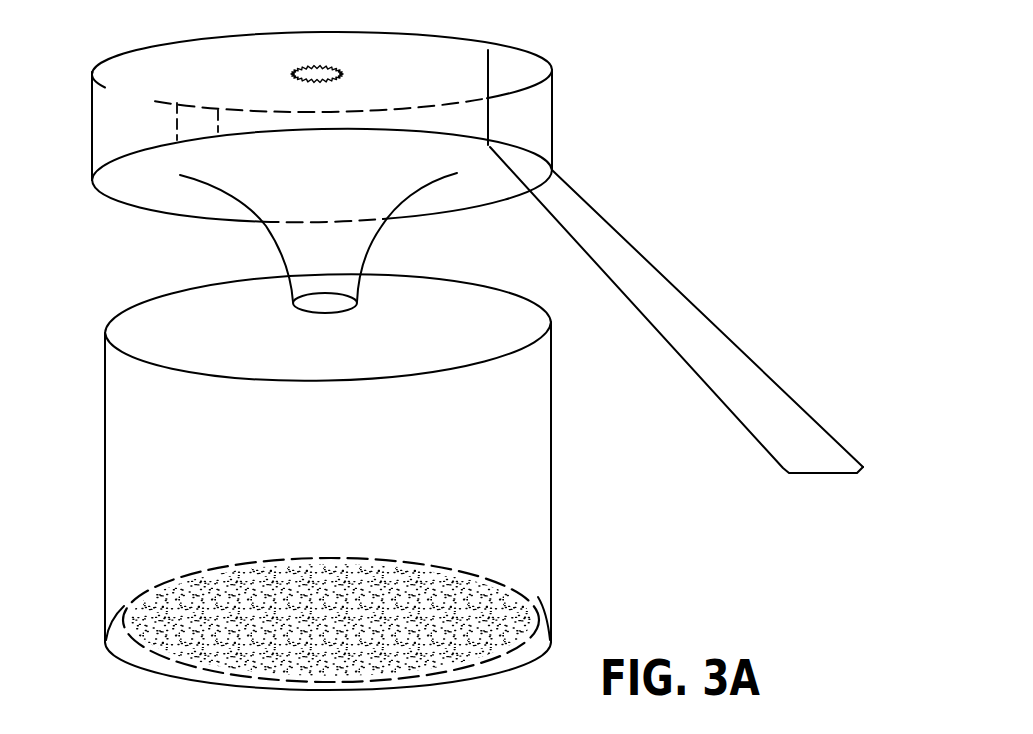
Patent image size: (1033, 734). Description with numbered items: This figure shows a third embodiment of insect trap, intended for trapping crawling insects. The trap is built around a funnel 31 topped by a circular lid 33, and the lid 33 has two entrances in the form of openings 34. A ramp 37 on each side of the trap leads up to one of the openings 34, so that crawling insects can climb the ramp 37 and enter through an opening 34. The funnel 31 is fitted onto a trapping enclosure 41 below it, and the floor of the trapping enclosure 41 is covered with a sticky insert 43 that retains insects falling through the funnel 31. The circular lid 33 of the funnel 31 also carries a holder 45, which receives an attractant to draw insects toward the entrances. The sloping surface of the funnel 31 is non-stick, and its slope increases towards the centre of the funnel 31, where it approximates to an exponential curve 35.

The funnel 31 is at (134, 49).
The circular lid 33 is at (472, 62).
The opening 34 is at (530, 116).
The exponential curve 35 is at (347, 190).
The ramp 37 is at (658, 293).
The trapping enclosure 41 is at (532, 491).
The sticky insert 43 is at (505, 621).
The holder 45 is at (292, 75).